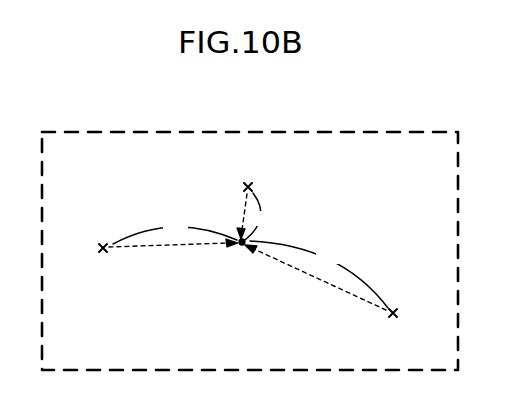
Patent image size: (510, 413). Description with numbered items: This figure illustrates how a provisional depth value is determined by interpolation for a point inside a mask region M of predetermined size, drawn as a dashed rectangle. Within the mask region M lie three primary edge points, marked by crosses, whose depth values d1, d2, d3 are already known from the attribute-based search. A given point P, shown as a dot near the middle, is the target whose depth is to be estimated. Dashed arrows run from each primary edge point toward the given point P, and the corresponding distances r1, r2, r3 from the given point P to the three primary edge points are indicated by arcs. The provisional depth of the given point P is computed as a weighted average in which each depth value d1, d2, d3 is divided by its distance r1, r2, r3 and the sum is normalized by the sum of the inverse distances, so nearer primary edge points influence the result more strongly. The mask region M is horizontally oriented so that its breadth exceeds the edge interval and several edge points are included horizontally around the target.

The mask region M is at (405, 131).
The depth value of first primary edge point d1 is at (166, 258).
The depth value of second primary edge point d2 is at (247, 199).
The depth value of third primary edge point d3 is at (324, 294).
The given point P is at (240, 255).
The distance to first primary edge point r1 is at (175, 232).
The distance to second primary edge point r2 is at (259, 216).
The distance to third primary edge point r3 is at (319, 274).